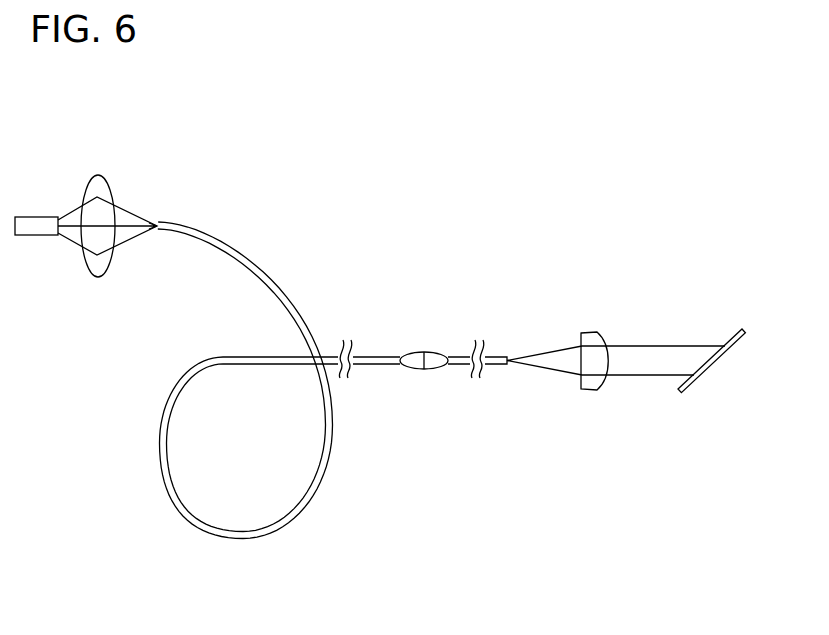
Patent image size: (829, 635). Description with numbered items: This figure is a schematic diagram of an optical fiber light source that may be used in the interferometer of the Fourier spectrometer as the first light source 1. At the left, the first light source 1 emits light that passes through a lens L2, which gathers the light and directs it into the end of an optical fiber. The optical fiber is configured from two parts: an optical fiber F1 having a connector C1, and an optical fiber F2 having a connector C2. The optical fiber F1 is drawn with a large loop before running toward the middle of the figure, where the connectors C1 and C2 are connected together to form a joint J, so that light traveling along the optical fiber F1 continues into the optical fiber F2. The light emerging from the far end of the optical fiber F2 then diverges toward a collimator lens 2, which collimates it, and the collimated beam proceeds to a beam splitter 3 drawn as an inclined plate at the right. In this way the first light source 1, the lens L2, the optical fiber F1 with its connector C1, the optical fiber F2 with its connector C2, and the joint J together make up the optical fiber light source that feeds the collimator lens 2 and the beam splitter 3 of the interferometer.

The first light source 1 is at (35, 216).
The lens L2 is at (98, 174).
The optical fiber F1 is at (205, 221).
The joint J is at (424, 351).
The connector C1 is at (413, 370).
The connector C2 is at (436, 370).
The optical fiber F2 is at (493, 355).
The collimator lens 2 is at (590, 331).
The beam splitter 3 is at (696, 386).